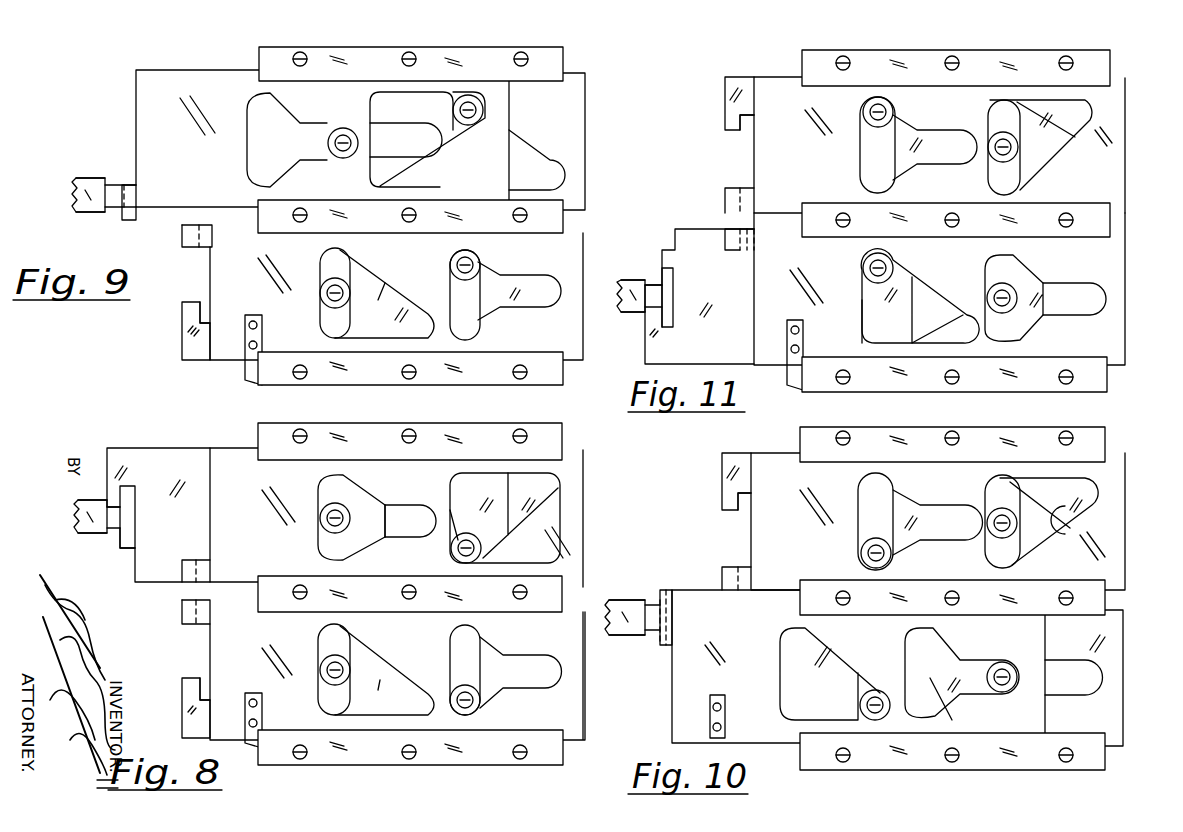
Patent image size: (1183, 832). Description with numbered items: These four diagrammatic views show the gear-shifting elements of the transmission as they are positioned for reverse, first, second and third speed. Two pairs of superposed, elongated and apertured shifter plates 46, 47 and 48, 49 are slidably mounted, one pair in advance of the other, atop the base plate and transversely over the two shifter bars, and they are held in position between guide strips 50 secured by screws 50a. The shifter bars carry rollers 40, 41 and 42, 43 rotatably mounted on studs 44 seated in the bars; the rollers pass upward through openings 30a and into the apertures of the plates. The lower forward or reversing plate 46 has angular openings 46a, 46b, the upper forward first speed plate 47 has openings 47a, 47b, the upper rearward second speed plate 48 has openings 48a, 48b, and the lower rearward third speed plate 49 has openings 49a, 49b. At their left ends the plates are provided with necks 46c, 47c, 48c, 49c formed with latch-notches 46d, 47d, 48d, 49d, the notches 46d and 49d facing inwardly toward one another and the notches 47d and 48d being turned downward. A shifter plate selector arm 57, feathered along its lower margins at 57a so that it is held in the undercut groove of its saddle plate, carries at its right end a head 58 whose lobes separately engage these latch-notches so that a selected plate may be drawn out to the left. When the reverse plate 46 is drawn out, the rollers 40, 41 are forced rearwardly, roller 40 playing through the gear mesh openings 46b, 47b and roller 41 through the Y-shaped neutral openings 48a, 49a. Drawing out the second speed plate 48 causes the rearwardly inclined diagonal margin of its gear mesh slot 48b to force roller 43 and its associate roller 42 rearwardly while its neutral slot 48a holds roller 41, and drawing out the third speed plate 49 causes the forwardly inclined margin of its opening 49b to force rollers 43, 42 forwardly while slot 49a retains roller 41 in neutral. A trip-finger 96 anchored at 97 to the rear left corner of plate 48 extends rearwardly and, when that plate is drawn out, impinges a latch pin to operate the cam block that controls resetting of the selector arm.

In FIG. 9, the slot 30a is at (324, 303).
In FIG. 8, the slot 30a is at (480, 645).
In FIG. 11, the slot 30a is at (870, 183).
In FIG. 10, the slot 30a is at (895, 545).
In FIG. 9, the roller 40 is at (466, 120).
In FIG. 8, the roller 40 is at (470, 539).
In FIG. 11, the roller 40 is at (996, 140).
In FIG. 10, the roller 40 is at (994, 520).
In FIG. 9, the roller 41 is at (461, 263).
In FIG. 8, the roller 41 is at (465, 690).
In FIG. 11, the roller 41 is at (998, 290).
In FIG. 10, the roller 41 is at (1008, 672).
In FIG. 9, the roller 42 is at (343, 152).
In FIG. 8, the roller 42 is at (345, 528).
In FIG. 11, the roller 42 is at (870, 111).
In FIG. 10, the roller 42 is at (861, 553).
In FIG. 9, the roller 43 is at (329, 286).
In FIG. 8, the roller 43 is at (329, 659).
In FIG. 11, the roller 43 is at (862, 268).
In FIG. 10, the roller 43 is at (876, 690).
In FIG. 9, the studs 44 is at (471, 102).
In FIG. 8, the studs 44 is at (325, 526).
In FIG. 11, the studs 44 is at (878, 128).
In FIG. 10, the studs 44 is at (876, 538).
In FIG. 9, the reversing shifter plate 46 is at (591, 117).
In FIG. 8, the reversing shifter plate 46 is at (133, 446).
In FIG. 11, the reversing shifter plate 46 is at (722, 90).
In FIG. 10, the reversing shifter plate 46 is at (720, 468).
In FIG. 9, the angular opening of reversing plate 46a is at (420, 132).
In FIG. 8, the angular opening of reversing plate 46a is at (320, 500).
In FIG. 9, the gear mesh opening of reversing plate 46b is at (556, 165).
In FIG. 8, the gear mesh opening of reversing plate 46b is at (390, 512).
In FIG. 11, the gear mesh opening of reversing plate 46b is at (1076, 136).
In FIG. 10, the gear mesh opening of reversing plate 46b is at (1066, 532).
In FIG. 8, the neck 46c is at (126, 470).
In FIG. 11, the neck 46c is at (742, 88).
In FIG. 10, the neck 46c is at (740, 468).
In FIG. 8, the latch-notch 46d is at (127, 486).
In FIG. 11, the latch-notch 46d is at (750, 129).
In FIG. 10, the latch-notch 46d is at (748, 510).
In FIG. 9, the first speed shifter plate 47 is at (165, 67).
In FIG. 8, the first speed shifter plate 47 is at (243, 448).
In FIG. 11, the first speed shifter plate 47 is at (772, 75).
In FIG. 10, the first speed shifter plate 47 is at (783, 452).
In FIG. 9, the angular opening of first speed plate 47a is at (246, 99).
In FIG. 8, the angular opening of first speed plate 47a is at (400, 536).
In FIG. 11, the angular opening of first speed plate 47a is at (933, 137).
In FIG. 10, the angular opening of first speed plate 47a is at (933, 508).
In FIG. 9, the gear mesh opening of first speed plate 47b is at (370, 106).
In FIG. 8, the gear mesh opening of first speed plate 47b is at (450, 493).
In FIG. 11, the gear mesh opening of first speed plate 47b is at (1062, 165).
In FIG. 10, the gear mesh opening of first speed plate 47b is at (1060, 548).
In FIG. 9, the neck 47c is at (139, 190).
In FIG. 8, the neck 47c is at (211, 572).
In FIG. 11, the neck 47c is at (757, 195).
In FIG. 10, the neck 47c is at (757, 585).
In FIG. 9, the latch-notch 47d is at (139, 198).
In FIG. 8, the latch-notch 47d is at (199, 561).
In FIG. 11, the latch-notch 47d is at (738, 197).
In FIG. 10, the latch-notch 47d is at (752, 567).
In FIG. 9, the second speed shifter plate 48 is at (584, 236).
In FIG. 8, the second speed shifter plate 48 is at (180, 643).
In FIG. 11, the second speed shifter plate 48 is at (752, 338).
In FIG. 10, the second speed shifter plate 48 is at (670, 700).
In FIG. 9, the Y-shaped neutral slot 48a is at (525, 280).
In FIG. 8, the Y-shaped neutral slot 48a is at (540, 658).
In FIG. 11, the Y-shaped neutral slot 48a is at (1068, 290).
In FIG. 10, the Y-shaped neutral slot 48a is at (942, 646).
In FIG. 9, the gear mesh opening 48b is at (395, 276).
In FIG. 8, the gear mesh opening 48b is at (386, 655).
In FIG. 11, the gear mesh opening 48b is at (862, 318).
In FIG. 10, the gear mesh opening 48b is at (783, 645).
In FIG. 9, the neck 48c is at (213, 236).
In FIG. 8, the neck 48c is at (211, 603).
In FIG. 11, the neck 48c is at (758, 243).
In FIG. 10, the neck 48c is at (676, 610).
In FIG. 9, the latch-notch 48d is at (199, 233).
In FIG. 8, the latch-notch 48d is at (182, 612).
In FIG. 11, the latch-notch 48d is at (740, 231).
In FIG. 10, the latch-notch 48d is at (670, 600).
In FIG. 9, the third speed shifter plate 49 is at (180, 346).
In FIG. 8, the third speed shifter plate 49 is at (180, 706).
In FIG. 11, the third speed shifter plate 49 is at (673, 237).
In FIG. 10, the third speed shifter plate 49 is at (1125, 651).
In FIG. 11, the Y-shaped neutral slot 49a is at (920, 330).
In FIG. 10, the Y-shaped neutral slot 49a is at (1085, 696).
In FIG. 9, the gear mesh opening 49b is at (393, 280).
In FIG. 8, the gear mesh opening 49b is at (378, 690).
In FIG. 11, the gear mesh opening 49b is at (862, 290).
In FIG. 10, the gear mesh opening 49b is at (949, 712).
In FIG. 9, the neck 49c is at (198, 344).
In FIG. 8, the neck 49c is at (198, 720).
In FIG. 11, the neck 49c is at (660, 343).
In FIG. 9, the latch-notch 49d is at (206, 318).
In FIG. 8, the latch-notch 49d is at (200, 692).
In FIG. 11, the latch-notch 49d is at (663, 330).
In FIG. 9, the guide strips 50 is at (282, 47).
In FIG. 8, the guide strips 50 is at (565, 592).
In FIG. 11, the guide strips 50 is at (808, 50).
In FIG. 10, the guide strips 50 is at (1110, 595).
In FIG. 9, the screws 50a is at (519, 57).
In FIG. 8, the screws 50a is at (518, 590).
In FIG. 11, the screws 50a is at (951, 55).
In FIG. 10, the screws 50a is at (948, 585).
In FIG. 9, the shifter plate selector arm 57 is at (69, 194).
In FIG. 8, the shifter plate selector arm 57 is at (73, 517).
In FIG. 11, the shifter plate selector arm 57 is at (616, 292).
In FIG. 10, the shifter plate selector arm 57 is at (624, 638).
In FIG. 9, the feathered lower margins 57a is at (80, 213).
In FIG. 8, the feathered lower margins 57a is at (87, 499).
In FIG. 11, the feathered lower margins 57a is at (626, 313).
In FIG. 10, the feathered lower margins 57a is at (628, 598).
In FIG. 9, the head 58 is at (127, 214).
In FIG. 8, the head 58 is at (126, 549).
In FIG. 11, the head 58 is at (659, 268).
In FIG. 10, the head 58 is at (665, 647).
In FIG. 9, the trip-finger 96 is at (246, 376).
In FIG. 8, the trip-finger 96 is at (245, 714).
In FIG. 11, the trip-finger 96 is at (792, 320).
In FIG. 10, the trip-finger 96 is at (710, 696).
In FIG. 9, the anchor of trip-finger 97 is at (258, 345).
In FIG. 8, the anchor of trip-finger 97 is at (258, 723).
In FIG. 11, the anchor of trip-finger 97 is at (803, 349).
In FIG. 10, the anchor of trip-finger 97 is at (727, 727).